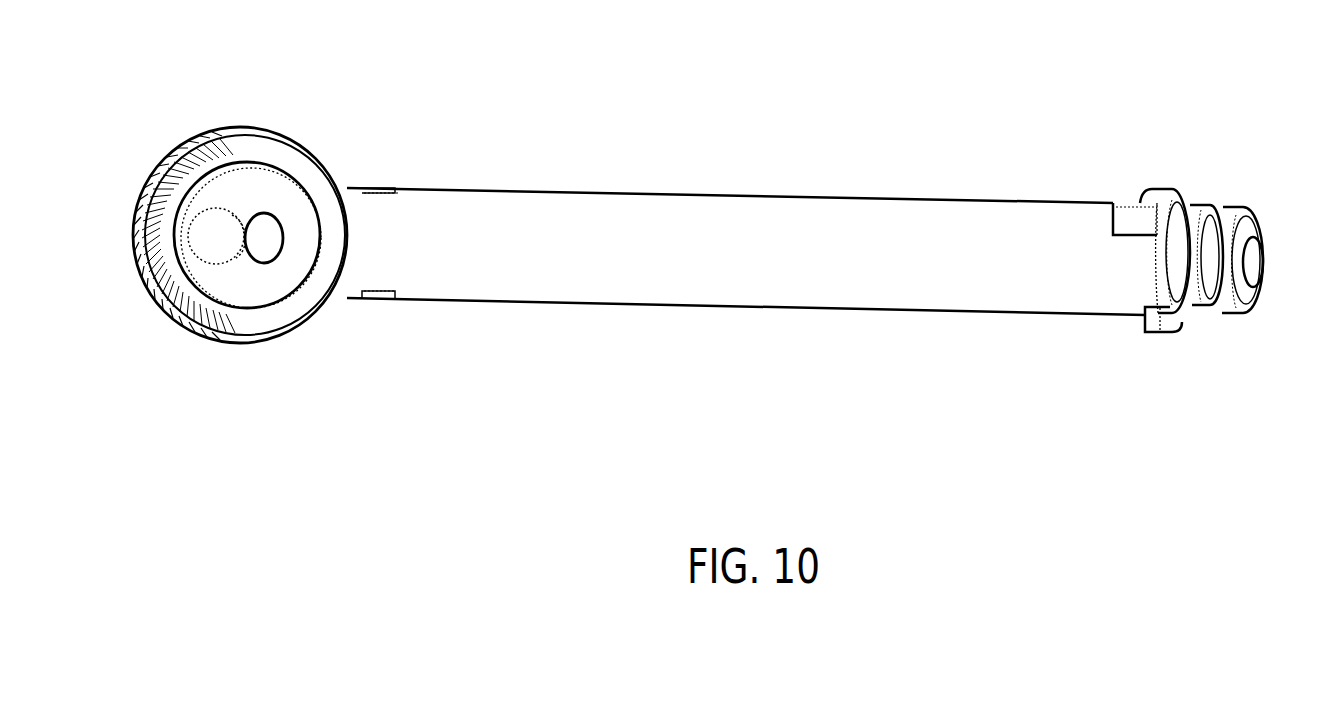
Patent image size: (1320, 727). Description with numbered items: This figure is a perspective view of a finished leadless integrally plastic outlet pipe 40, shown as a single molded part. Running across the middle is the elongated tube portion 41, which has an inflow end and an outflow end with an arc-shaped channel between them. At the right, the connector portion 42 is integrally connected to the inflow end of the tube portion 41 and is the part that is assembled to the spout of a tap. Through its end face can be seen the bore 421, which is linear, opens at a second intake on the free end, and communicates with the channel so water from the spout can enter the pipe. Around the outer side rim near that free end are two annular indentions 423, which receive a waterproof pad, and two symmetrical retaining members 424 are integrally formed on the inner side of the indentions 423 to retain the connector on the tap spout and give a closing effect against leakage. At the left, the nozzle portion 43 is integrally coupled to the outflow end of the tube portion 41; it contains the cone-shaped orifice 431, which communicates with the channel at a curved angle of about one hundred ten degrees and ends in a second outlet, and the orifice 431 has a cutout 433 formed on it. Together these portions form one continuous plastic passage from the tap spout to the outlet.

The integrally plastic outlet pipe 40 is at (794, 148).
The tube portion 41 is at (520, 192).
The connector portion 42 is at (1187, 207).
The nozzle portion 43 is at (160, 160).
The bore 421 is at (1250, 257).
The annular indentions 423 is at (1223, 207).
The retaining members 424 is at (1147, 198).
The orifice 431 is at (247, 273).
The cutout 433 is at (257, 240).